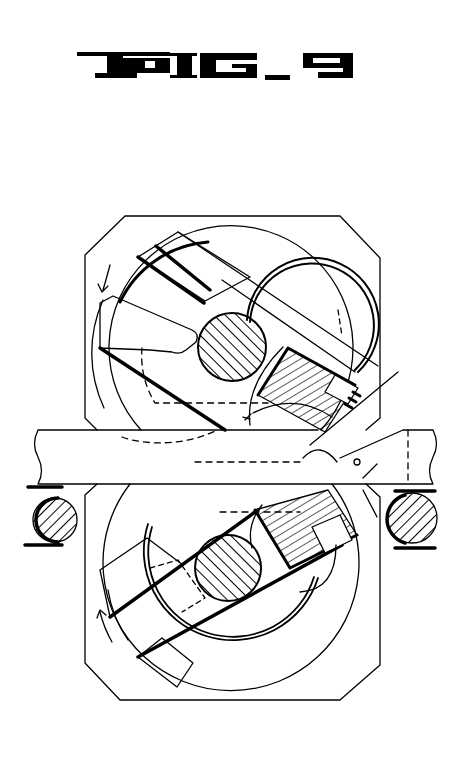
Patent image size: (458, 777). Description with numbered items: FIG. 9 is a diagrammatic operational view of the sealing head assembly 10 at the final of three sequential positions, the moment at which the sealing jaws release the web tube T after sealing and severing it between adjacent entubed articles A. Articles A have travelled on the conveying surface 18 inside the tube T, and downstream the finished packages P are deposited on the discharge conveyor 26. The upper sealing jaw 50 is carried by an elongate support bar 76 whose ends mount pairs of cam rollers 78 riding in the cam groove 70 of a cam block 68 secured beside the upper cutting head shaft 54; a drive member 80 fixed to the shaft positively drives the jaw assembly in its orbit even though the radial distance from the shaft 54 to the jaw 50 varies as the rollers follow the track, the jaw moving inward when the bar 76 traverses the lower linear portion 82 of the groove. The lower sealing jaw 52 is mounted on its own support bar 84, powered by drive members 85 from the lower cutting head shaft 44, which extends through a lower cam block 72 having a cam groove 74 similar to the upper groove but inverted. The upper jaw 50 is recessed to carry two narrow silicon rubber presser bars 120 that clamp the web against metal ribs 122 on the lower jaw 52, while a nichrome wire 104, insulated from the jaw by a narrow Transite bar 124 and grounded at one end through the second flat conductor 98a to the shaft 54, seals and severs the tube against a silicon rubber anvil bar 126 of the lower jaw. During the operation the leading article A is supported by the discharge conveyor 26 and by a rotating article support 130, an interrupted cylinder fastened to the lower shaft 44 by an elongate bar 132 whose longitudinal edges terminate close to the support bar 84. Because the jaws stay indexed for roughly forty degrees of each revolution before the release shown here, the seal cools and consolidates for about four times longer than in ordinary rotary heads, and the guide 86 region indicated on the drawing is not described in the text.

The sealing head assembly 10 is at (129, 178).
The conveying surface 18 is at (50, 490).
The discharge conveyor 26 is at (423, 548).
The lower cutting head shaft 44 is at (258, 593).
The upper sealing jaw 50 is at (357, 381).
The lower sealing jaw 52 is at (303, 458).
The upper cutting head shaft 54 is at (227, 320).
The cam block 68 is at (322, 222).
The cam groove 70 is at (277, 247).
The cam block 72 is at (362, 660).
The cam groove 74 is at (339, 622).
The support bar 76 is at (282, 360).
The cam rollers 78 is at (263, 376).
The drive member 80 is at (203, 252).
The lower linear portion 82 is at (123, 450).
The support bar 84 is at (277, 528).
The drive members 85 is at (230, 650).
The tape guide post 86 is at (123, 468).
The second flat conductor 98a is at (353, 278).
The nichrome wire 104 is at (350, 413).
The presser bars 120 is at (353, 397).
The metal ribs 122 is at (361, 462).
The Transite bar 124 is at (262, 410).
The anvil bar 126 is at (330, 502).
The article support 130 is at (308, 600).
The elongate bar 132 is at (173, 608).
The tube T is at (233, 456).
The packages P is at (413, 431).
The articles A is at (330, 444).